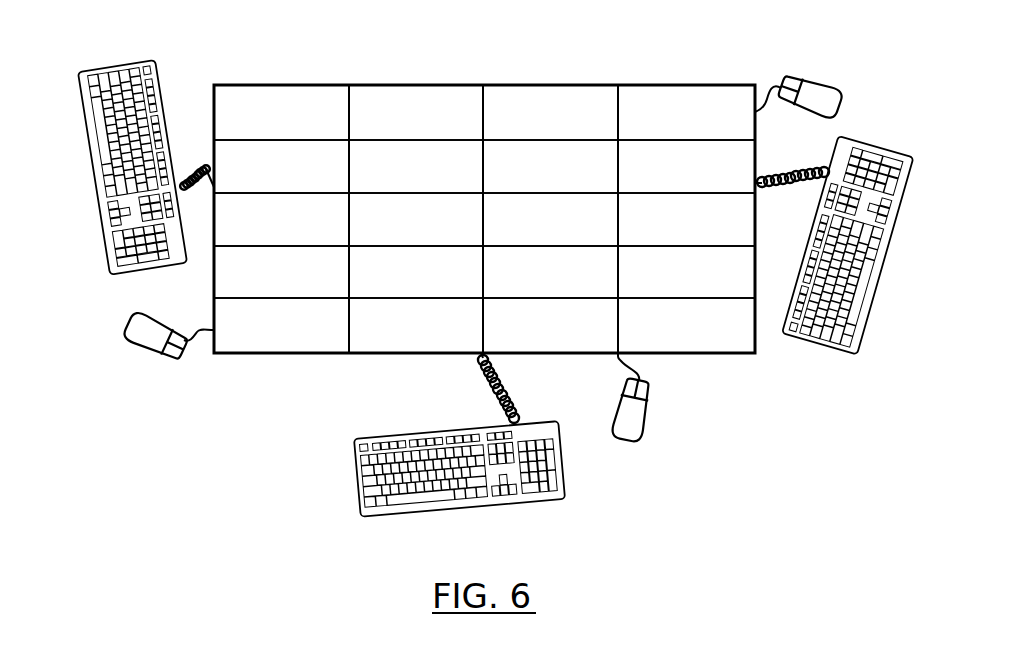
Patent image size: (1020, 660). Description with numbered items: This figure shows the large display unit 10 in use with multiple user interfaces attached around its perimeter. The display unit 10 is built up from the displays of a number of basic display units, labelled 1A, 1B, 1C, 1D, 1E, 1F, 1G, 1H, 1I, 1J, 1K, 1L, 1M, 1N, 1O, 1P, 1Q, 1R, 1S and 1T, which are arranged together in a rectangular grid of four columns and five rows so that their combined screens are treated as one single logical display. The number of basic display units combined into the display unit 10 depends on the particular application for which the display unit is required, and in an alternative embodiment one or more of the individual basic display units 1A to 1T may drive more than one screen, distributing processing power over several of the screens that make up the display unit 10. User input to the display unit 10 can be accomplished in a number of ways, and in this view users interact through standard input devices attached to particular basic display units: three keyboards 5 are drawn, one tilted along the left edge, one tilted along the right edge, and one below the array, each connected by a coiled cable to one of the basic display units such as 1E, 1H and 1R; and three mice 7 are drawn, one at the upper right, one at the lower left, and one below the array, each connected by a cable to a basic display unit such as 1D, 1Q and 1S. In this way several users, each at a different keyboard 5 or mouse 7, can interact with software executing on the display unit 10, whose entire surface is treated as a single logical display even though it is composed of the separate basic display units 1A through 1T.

The display unit 10 is at (638, 64).
The keyboard 5 is at (120, 61).
The mouse 7 is at (815, 78).
The basic display unit 1A is at (313, 138).
The basic display unit 1B is at (448, 138).
The basic display unit 1C is at (583, 138).
The basic display unit 1D is at (718, 138).
The basic display unit 1E is at (313, 191).
The basic display unit 1F is at (448, 191).
The basic display unit 1G is at (583, 191).
The basic display unit 1H is at (718, 191).
The basic display unit 1I is at (316, 244).
The basic display unit 1J is at (450, 244).
The basic display unit 1K is at (583, 244).
The basic display unit 1L is at (719, 244).
The basic display unit 1M is at (310, 297).
The basic display unit 1N is at (447, 297).
The basic display unit 1O is at (581, 297).
The basic display unit 1P is at (718, 297).
The basic display unit 1Q is at (312, 350).
The basic display unit 1R is at (447, 350).
The basic display unit 1S is at (583, 350).
The basic display unit 1T is at (719, 350).